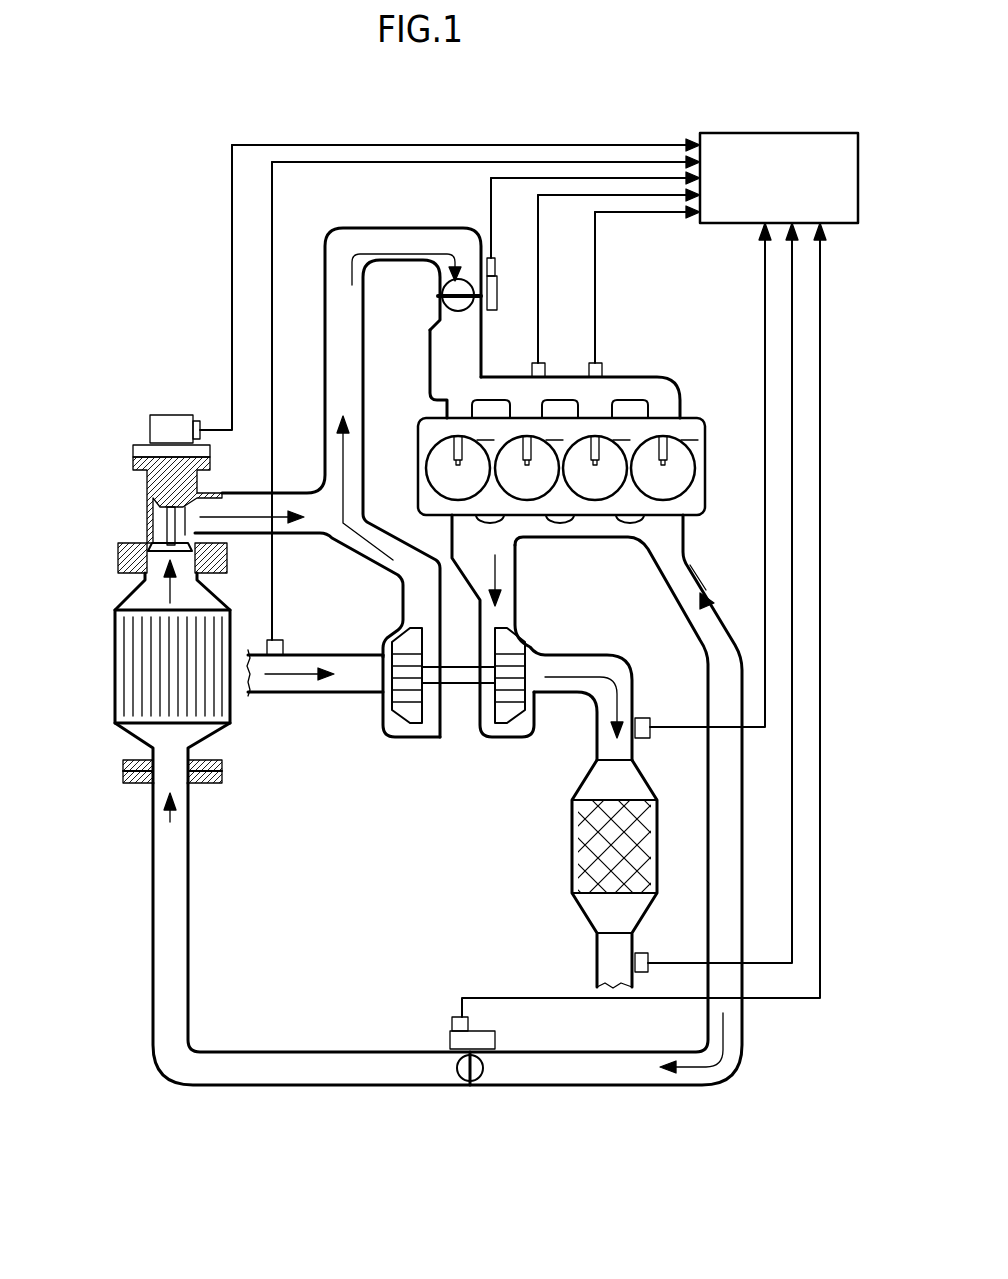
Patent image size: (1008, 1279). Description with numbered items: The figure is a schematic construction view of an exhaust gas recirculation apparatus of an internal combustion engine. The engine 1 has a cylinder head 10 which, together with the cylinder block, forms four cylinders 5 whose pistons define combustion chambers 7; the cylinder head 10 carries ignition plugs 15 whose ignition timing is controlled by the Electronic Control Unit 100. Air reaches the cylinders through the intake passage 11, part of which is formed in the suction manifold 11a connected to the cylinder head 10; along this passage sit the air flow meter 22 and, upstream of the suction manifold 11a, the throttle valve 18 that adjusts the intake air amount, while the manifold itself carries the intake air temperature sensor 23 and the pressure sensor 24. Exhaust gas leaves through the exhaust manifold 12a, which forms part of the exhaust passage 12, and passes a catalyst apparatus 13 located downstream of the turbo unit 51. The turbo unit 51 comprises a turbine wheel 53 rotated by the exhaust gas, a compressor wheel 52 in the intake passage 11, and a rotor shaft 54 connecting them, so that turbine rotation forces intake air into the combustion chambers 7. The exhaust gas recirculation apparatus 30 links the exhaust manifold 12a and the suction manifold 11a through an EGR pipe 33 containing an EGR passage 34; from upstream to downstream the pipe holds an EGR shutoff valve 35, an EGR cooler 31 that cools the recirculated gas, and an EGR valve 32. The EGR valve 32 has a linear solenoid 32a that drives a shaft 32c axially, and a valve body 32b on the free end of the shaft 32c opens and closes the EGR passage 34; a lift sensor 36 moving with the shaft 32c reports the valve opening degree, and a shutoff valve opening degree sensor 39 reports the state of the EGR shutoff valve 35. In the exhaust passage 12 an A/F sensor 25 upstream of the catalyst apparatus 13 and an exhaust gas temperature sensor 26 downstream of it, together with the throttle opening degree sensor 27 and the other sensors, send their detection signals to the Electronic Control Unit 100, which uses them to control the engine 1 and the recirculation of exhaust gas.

The engine 1 is at (684, 371).
The cylinders 5 is at (433, 447).
The combustion chambers 7 is at (682, 454).
The cylinder head 10 is at (705, 489).
The intake passage 11 is at (358, 693).
The suction manifold 11a is at (640, 378).
The exhaust passage 12 is at (520, 602).
The exhaust manifold 12a is at (585, 548).
The catalyst apparatus 13 is at (572, 847).
The ignition plugs 15 is at (671, 457).
The throttle valve 18 is at (438, 298).
The air flow meter 22 is at (285, 647).
The intake air temperature sensor 23 is at (539, 362).
The pressure sensor 24 is at (595, 362).
The A/F sensor 25 is at (640, 718).
The exhaust gas temperature sensor 26 is at (648, 953).
The throttle opening degree sensor 27 is at (502, 287).
The exhaust gas recirculation apparatus 30 is at (139, 373).
The EGR cooler 31 is at (115, 661).
The EGR valve 32 is at (147, 478).
The linear solenoid 32a is at (150, 429).
The valve body 32b is at (187, 553).
The shaft 32c is at (167, 522).
The EGR pipe 33 is at (150, 1037).
The EGR passage 34 is at (260, 1087).
The EGR shutoff valve 35 is at (480, 1077).
The lift sensor 36 is at (201, 419).
The shutoff valve opening degree sensor 39 is at (452, 1022).
The turbo unit 51 is at (461, 780).
The compressor wheel 52 is at (408, 715).
The turbine wheel 53 is at (512, 715).
The rotor shaft 54 is at (460, 690).
The Electronic Control Unit 100 is at (793, 133).